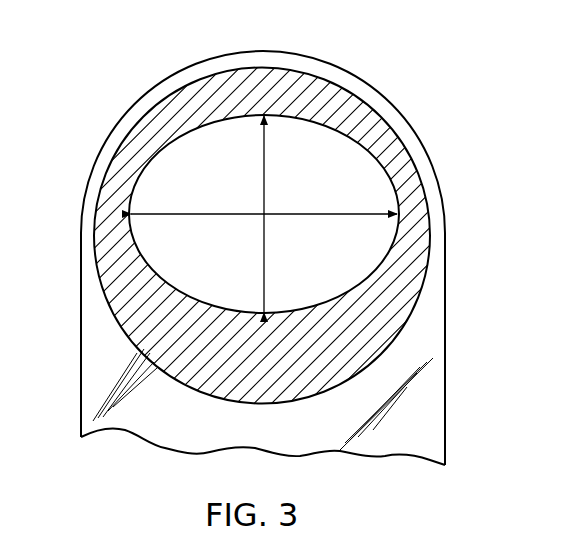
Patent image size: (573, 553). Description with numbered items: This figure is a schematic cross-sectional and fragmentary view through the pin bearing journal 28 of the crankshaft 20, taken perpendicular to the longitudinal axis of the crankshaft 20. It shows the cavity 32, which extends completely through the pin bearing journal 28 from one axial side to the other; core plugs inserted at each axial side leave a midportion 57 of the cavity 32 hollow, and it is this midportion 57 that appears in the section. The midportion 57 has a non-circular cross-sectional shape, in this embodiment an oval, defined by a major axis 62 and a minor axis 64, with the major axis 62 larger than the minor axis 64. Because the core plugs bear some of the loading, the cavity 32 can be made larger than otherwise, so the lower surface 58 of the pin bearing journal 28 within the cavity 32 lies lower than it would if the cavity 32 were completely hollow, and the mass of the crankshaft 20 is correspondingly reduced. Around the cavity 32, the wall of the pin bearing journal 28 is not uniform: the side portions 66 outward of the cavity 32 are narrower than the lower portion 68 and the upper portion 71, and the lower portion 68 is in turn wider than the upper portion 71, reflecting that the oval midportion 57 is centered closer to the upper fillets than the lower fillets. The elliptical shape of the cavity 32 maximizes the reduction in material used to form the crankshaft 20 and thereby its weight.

The crankshaft 20 is at (385, 108).
The pin bearing journal 28 is at (340, 70).
The cavity 32 is at (350, 190).
The midportion 57 is at (298, 252).
The lower surface 58 is at (292, 308).
The major axis 62 is at (235, 213).
The minor axis 64 is at (266, 190).
The side portions 66 is at (113, 240).
The lower portion 68 is at (263, 362).
The upper portion 71 is at (262, 85).